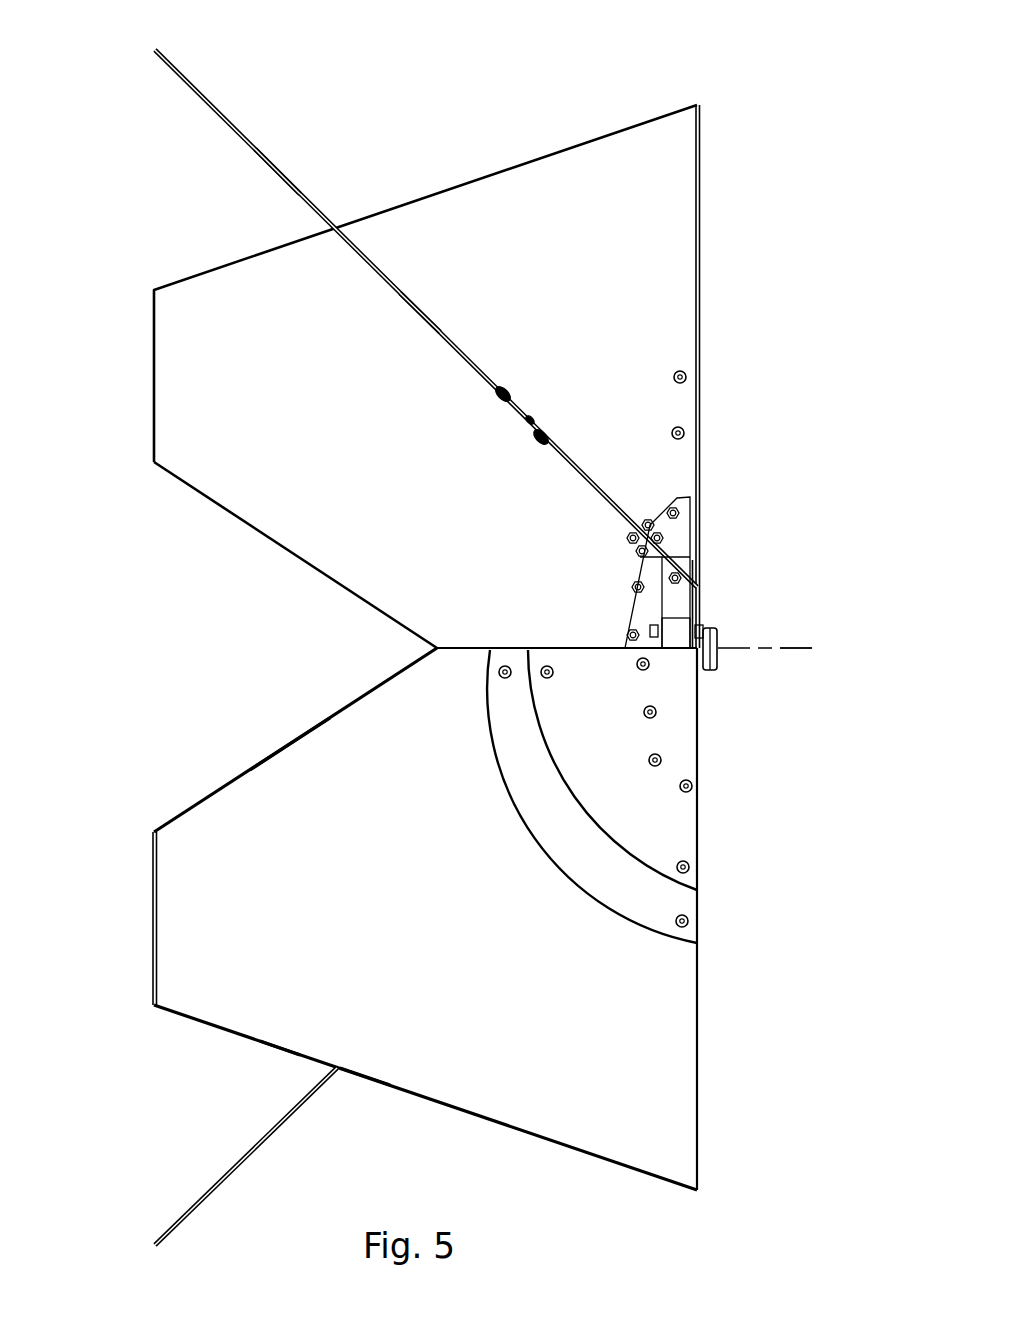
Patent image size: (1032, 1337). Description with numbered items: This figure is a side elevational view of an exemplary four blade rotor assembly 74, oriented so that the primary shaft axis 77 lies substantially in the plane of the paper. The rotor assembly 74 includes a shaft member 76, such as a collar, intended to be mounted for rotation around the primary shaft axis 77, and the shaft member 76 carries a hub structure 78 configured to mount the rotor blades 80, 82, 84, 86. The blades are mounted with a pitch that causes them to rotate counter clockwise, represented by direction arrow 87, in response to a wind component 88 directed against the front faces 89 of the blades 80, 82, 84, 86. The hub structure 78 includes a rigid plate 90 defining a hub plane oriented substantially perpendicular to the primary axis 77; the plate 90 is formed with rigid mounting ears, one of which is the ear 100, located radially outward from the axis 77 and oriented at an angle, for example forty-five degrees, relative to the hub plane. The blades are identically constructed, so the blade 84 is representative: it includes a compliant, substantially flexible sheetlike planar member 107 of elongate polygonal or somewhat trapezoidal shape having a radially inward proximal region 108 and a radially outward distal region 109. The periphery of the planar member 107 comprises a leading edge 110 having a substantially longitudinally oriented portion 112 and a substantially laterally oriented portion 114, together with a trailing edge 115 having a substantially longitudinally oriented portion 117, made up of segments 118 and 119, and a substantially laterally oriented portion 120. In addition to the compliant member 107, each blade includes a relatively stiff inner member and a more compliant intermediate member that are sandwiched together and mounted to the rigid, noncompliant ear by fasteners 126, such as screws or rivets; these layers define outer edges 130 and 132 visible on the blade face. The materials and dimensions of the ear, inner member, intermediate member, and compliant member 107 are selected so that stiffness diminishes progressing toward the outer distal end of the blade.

The four blade rotor assembly 74 is at (220, 592).
The shaft member 76 is at (738, 627).
The primary shaft axis 77 is at (790, 675).
The hub structure 78 is at (680, 597).
The rotor blade 80 is at (399, 318).
The rotor blade 82 is at (371, 385).
The rotor blade 84 is at (411, 919).
The rotor blade 86 is at (165, 1195).
The direction arrow 87 is at (295, 564).
The wind component 88 is at (850, 648).
The front faces 89 is at (307, 195).
The rigid plate 90 is at (730, 602).
The rigid mounting ear 100 is at (629, 572).
The compliant planar member 107 is at (229, 780).
The proximal region 108 is at (628, 792).
The distal region 109 is at (292, 615).
The leading edge 110 is at (419, 316).
The longitudinally oriented portion of leading edge 112 is at (419, 1097).
The laterally oriented portion of leading edge 114 is at (700, 1113).
The trailing edge 115 is at (230, 736).
The longitudinally oriented portion of trailing edge 117 is at (295, 740).
The trailing edge segment 118 is at (434, 649).
The trailing edge segment 119 is at (274, 712).
The laterally oriented portion of trailing edge 120 is at (152, 957).
The fasteners 126 is at (728, 773).
The outer edge 130 is at (558, 652).
The outer edge 132 is at (553, 661).